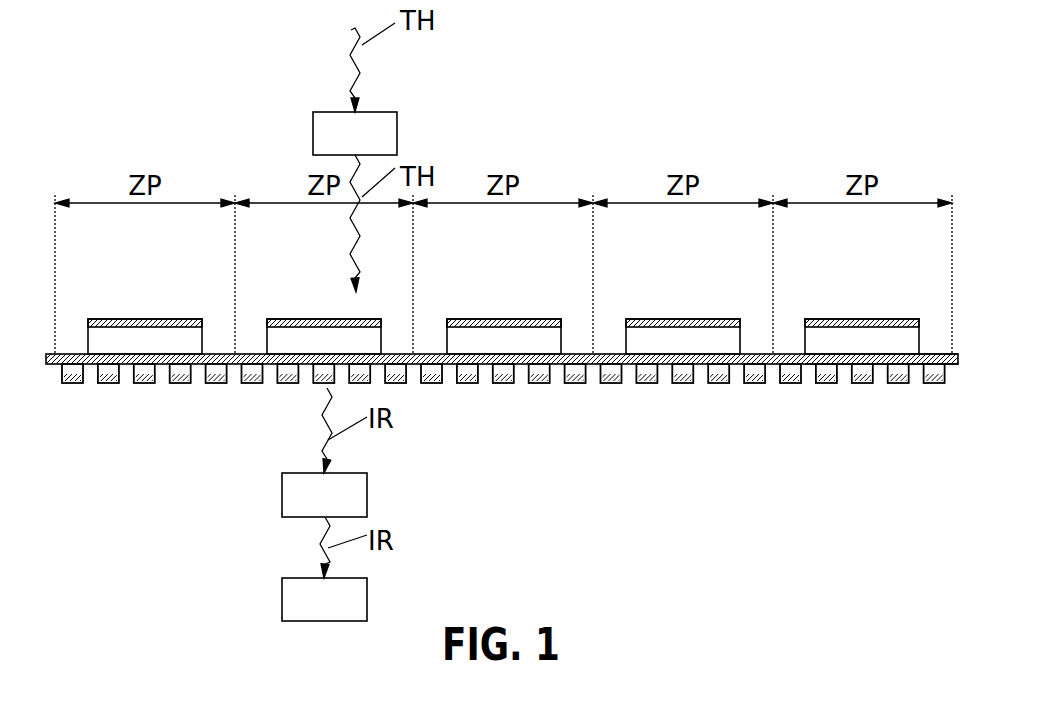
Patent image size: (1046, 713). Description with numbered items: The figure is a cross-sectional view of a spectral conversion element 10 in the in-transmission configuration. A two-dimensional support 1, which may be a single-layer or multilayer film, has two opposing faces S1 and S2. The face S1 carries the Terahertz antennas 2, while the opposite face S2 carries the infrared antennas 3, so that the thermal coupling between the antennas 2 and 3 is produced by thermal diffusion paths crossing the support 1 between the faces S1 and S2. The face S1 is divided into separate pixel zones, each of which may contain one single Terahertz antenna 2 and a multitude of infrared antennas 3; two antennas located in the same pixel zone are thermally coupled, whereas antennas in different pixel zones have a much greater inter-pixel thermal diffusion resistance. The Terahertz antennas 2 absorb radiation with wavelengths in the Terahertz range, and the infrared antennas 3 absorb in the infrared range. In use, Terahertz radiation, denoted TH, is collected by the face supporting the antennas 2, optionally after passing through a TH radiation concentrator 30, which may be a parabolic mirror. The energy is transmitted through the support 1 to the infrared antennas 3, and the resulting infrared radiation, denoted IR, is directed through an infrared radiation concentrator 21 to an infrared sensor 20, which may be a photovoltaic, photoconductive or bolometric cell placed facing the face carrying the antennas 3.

The two-dimensional support 1 is at (783, 353).
The Terahertz antennas 2 is at (133, 300).
The infrared antennas 3 is at (62, 398).
The conversion element 10 is at (802, 428).
The infrared sensor 20 is at (282, 593).
The infrared radiation concentrator 21 is at (282, 488).
The TH radiation concentrator 30 is at (313, 125).
The first face of the support S1 is at (938, 340).
The second face of the support S2 is at (950, 380).